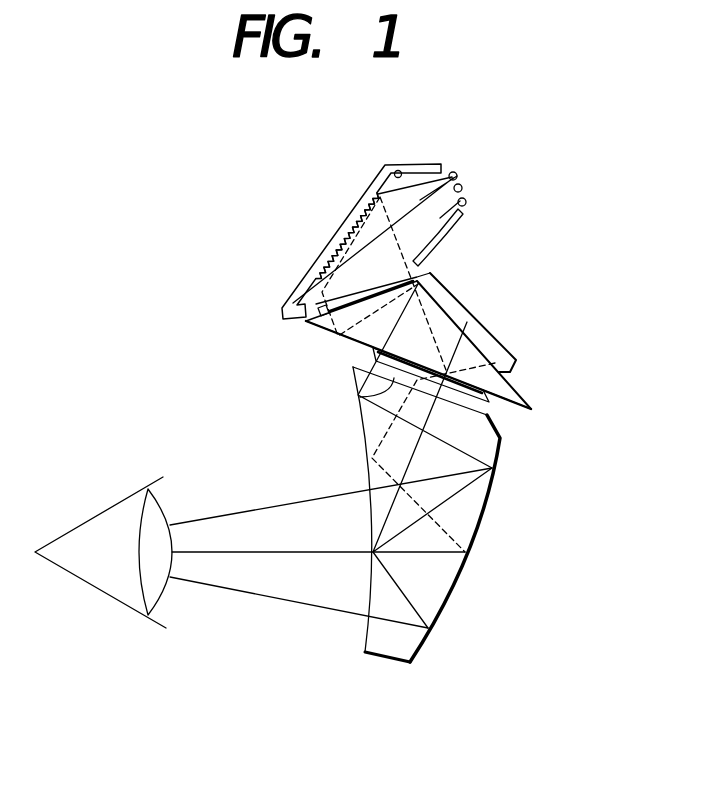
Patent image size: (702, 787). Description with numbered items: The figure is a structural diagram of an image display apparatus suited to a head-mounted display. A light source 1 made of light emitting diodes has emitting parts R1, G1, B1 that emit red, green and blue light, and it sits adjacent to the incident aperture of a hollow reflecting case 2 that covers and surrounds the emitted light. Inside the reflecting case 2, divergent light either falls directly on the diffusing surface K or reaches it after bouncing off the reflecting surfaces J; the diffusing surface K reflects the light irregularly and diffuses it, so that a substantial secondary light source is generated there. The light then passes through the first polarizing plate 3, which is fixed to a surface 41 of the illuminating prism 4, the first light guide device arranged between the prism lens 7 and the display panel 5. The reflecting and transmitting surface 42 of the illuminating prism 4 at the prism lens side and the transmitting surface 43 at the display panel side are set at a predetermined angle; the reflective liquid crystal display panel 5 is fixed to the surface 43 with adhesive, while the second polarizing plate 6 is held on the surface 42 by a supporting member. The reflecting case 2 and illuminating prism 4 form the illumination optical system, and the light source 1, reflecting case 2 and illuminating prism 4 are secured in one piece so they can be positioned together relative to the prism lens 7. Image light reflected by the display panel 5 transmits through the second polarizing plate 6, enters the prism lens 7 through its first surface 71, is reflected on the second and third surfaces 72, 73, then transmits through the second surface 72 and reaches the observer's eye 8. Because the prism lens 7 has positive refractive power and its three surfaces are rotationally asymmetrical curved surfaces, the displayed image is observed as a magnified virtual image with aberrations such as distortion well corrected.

The light source 1 is at (506, 182).
The emitting part G1 is at (456, 173).
The emitting part R1 is at (463, 189).
The emitting part B1 is at (495, 216).
The reflecting surfaces J is at (398, 170).
The diffusing surface K is at (330, 240).
The reflecting case 2 is at (292, 272).
The first polarizing plate 3 is at (438, 268).
The illuminating prism 4 is at (416, 350).
The surface of illuminating prism 41 is at (298, 322).
The reflecting and transmitting surface 42 is at (312, 330).
The transmitting surface 43 is at (535, 405).
The reflective liquid crystal display panel 5 is at (500, 333).
The second polarizing plate 6 is at (492, 407).
The prism lens 7 is at (405, 473).
The first surface 71 is at (358, 397).
The second surface 72 is at (368, 444).
The third surface 73 is at (487, 502).
The observer's eye 8 is at (85, 583).